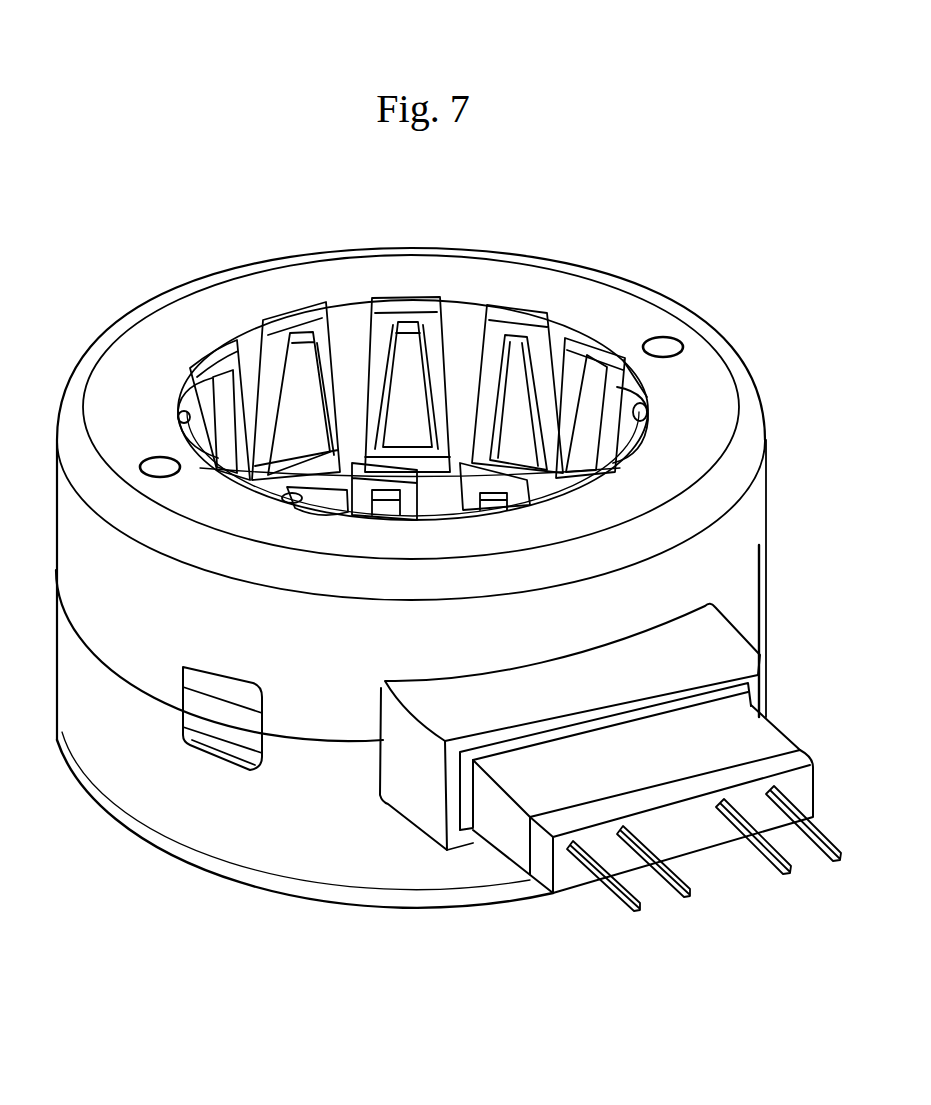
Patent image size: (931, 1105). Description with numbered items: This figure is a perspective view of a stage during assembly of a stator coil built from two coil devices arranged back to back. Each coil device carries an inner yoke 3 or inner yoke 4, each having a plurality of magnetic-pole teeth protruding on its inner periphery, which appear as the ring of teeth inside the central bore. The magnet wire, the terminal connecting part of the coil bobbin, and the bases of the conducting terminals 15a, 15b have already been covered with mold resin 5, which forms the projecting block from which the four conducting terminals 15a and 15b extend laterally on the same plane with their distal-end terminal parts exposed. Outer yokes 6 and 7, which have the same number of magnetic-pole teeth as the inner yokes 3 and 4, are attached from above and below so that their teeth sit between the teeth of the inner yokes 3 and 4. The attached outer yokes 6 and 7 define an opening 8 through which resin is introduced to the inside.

The inner yoke 3 is at (403, 320).
The inner yoke 4 is at (338, 483).
The mold resin 5 is at (730, 638).
The outer yoke 6 is at (667, 297).
The outer yoke 7 is at (253, 890).
The opening 8 is at (197, 750).
The conducting terminal 15a is at (613, 897).
The conducting terminal 15b is at (667, 893).